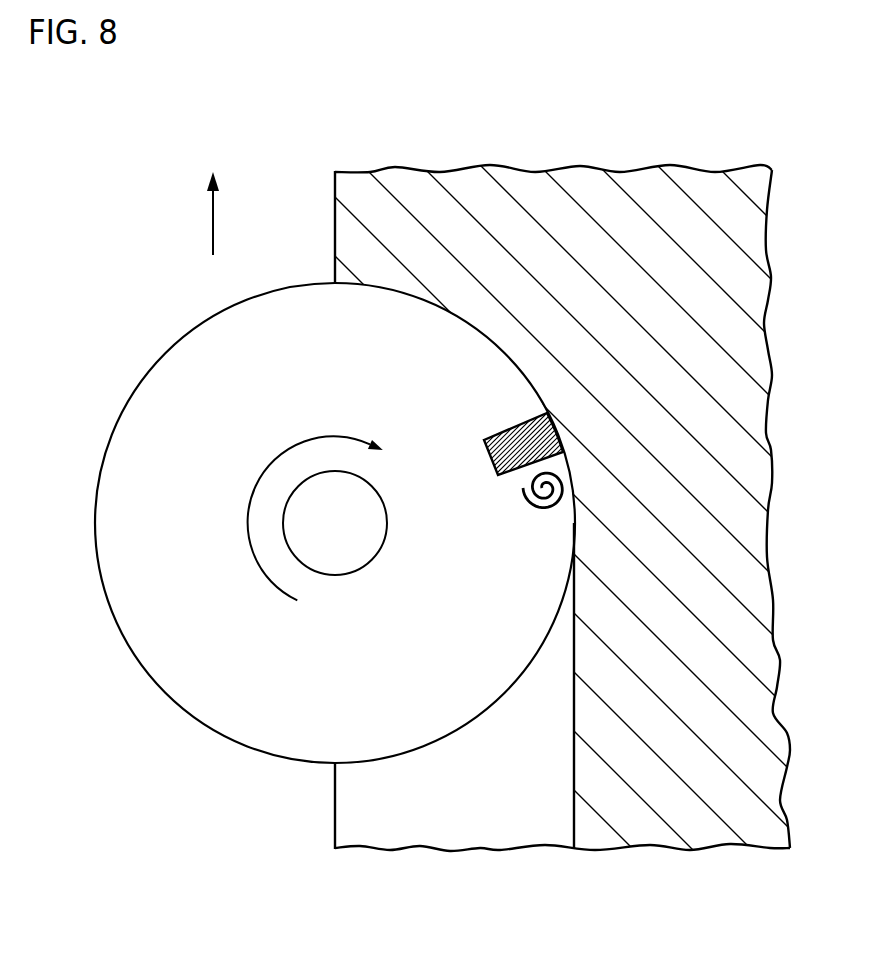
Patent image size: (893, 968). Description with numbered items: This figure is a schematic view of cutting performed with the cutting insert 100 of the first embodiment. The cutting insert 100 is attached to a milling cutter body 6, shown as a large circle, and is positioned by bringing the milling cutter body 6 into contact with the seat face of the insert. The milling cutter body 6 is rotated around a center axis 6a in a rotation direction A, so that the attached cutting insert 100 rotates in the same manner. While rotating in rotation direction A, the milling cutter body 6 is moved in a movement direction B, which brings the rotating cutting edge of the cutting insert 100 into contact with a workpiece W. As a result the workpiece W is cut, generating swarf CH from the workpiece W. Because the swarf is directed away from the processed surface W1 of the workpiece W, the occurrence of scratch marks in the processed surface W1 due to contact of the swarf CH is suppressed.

The cutting insert 100 is at (505, 443).
The milling cutter body 6 is at (140, 402).
The center axis 6a is at (328, 520).
The rotation direction A is at (260, 562).
The movement direction B is at (209, 223).
The swarf CH is at (530, 513).
The processed surface W1 is at (577, 765).
The workpiece W is at (710, 827).